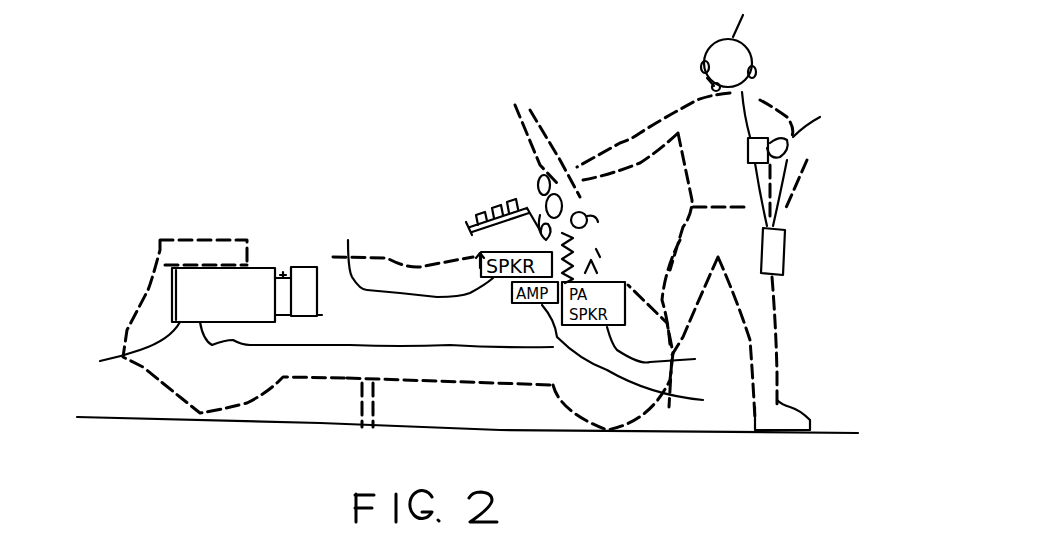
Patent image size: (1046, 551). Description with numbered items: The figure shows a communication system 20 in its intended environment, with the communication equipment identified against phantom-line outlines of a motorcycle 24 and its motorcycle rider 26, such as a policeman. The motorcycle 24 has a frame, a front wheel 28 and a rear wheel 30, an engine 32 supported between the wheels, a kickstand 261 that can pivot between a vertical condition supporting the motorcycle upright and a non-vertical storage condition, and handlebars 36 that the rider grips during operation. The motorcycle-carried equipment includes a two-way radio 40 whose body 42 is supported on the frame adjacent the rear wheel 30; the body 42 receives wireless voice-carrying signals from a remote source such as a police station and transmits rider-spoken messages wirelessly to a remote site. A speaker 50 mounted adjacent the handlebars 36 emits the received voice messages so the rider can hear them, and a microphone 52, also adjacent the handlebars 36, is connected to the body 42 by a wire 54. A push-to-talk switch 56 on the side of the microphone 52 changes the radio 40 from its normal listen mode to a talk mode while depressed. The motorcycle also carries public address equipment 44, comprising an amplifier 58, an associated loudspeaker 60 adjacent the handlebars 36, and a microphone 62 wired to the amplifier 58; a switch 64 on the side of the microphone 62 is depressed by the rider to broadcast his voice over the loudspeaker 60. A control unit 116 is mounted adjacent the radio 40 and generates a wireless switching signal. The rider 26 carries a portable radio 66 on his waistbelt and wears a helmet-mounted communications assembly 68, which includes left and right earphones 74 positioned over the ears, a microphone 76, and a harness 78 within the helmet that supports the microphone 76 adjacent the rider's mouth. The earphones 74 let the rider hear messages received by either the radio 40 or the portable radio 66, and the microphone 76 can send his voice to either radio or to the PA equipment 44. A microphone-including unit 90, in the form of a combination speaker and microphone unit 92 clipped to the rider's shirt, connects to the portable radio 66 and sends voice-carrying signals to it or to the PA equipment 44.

The communication system 20 is at (865, 206).
The motorcycle 24 is at (288, 266).
The motorcycle rider 26 is at (778, 330).
The front wheel 28 is at (621, 433).
The rear wheel 30 is at (200, 413).
The engine 32 is at (467, 387).
The handlebars 36 is at (538, 220).
The two-way radio 40 is at (170, 293).
The body 42 is at (118, 356).
The public address (PA) equipment 44 is at (703, 420).
The speaker 50 is at (417, 253).
The microphone 52 is at (600, 257).
The wire 54 is at (348, 345).
The push-to-talk (PTT) switch 56 is at (598, 225).
The amplifier 58 is at (639, 359).
The loudspeaker 60 is at (672, 349).
The microphone 62 is at (563, 205).
The switch 64 is at (540, 175).
The portable radio 66 is at (778, 260).
The communications assembly 68 is at (753, 50).
The earphones 74 is at (703, 63).
The microphone 76 is at (711, 86).
The harness 78 is at (757, 18).
The microphone-including unit 90 is at (820, 117).
The combination speaker and microphone unit 92 is at (770, 157).
The control unit 116 is at (320, 278).
The kickstand 261 is at (373, 413).